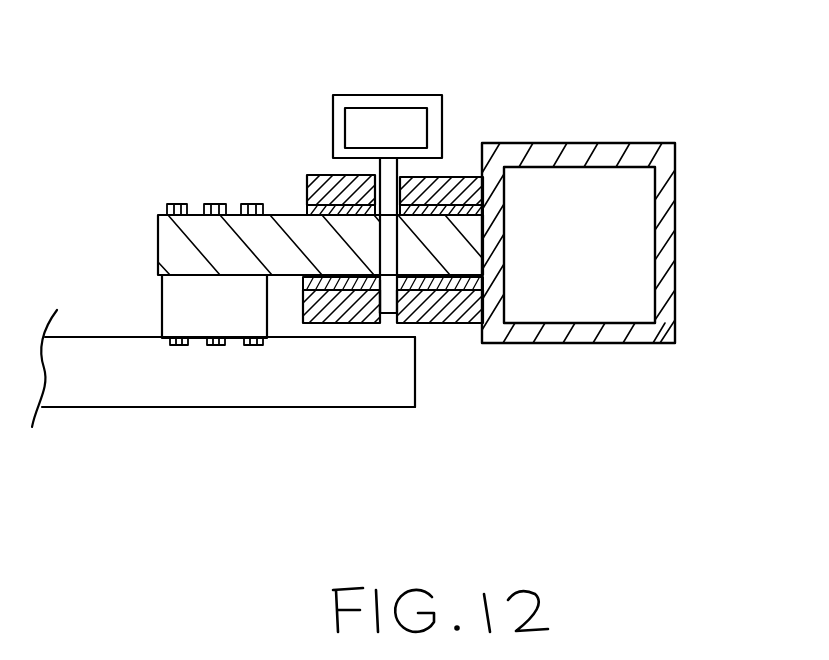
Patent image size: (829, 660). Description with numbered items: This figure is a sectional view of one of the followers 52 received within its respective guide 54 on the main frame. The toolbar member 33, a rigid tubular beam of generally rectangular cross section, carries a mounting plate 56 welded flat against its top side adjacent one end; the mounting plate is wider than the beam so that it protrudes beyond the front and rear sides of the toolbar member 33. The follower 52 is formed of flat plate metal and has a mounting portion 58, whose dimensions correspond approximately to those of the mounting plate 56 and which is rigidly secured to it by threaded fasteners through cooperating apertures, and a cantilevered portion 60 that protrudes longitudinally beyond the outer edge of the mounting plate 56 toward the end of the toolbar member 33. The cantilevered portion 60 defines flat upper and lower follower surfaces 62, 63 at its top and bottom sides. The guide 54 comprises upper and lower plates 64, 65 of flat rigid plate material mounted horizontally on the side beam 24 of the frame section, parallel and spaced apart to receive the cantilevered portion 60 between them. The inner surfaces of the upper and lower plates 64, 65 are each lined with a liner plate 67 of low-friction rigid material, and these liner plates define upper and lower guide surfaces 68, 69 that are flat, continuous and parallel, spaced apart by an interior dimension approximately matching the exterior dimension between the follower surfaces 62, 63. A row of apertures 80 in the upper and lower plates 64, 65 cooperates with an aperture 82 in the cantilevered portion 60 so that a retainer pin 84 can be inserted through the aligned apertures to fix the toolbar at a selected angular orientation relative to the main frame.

The side beam 24 is at (676, 241).
The toolbar member 33 is at (97, 392).
The follower 52 is at (250, 186).
The guide 54 is at (455, 168).
The mounting plate 56 is at (190, 302).
The mounting portion 58 is at (158, 236).
The cantilevered portion 60 is at (318, 238).
The upper follower surface 62 is at (350, 177).
The lower follower surface 63 is at (443, 323).
The upper plate 64 is at (460, 177).
The lower plate 65 is at (465, 325).
The liner plate 67 is at (485, 210).
The upper guide surface 68 is at (310, 215).
The lower guide surface 69 is at (300, 282).
The row of apertures 80 is at (405, 178).
The aperture 82 is at (323, 322).
The retainer pin 84 is at (387, 323).